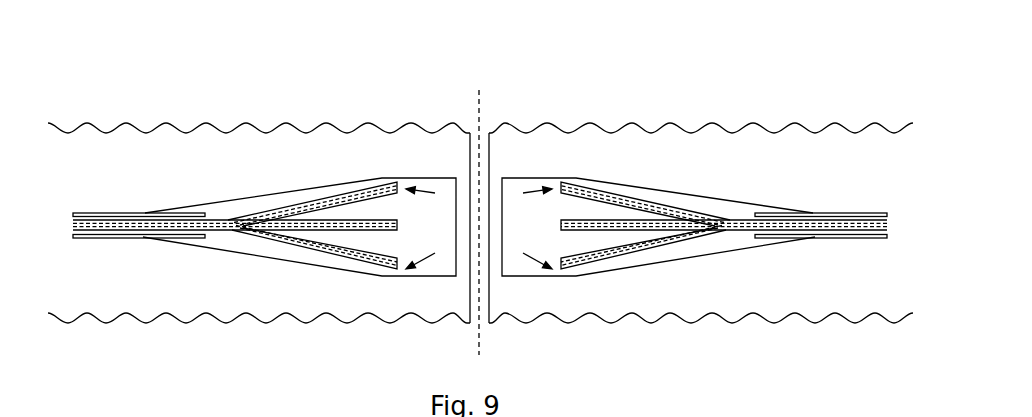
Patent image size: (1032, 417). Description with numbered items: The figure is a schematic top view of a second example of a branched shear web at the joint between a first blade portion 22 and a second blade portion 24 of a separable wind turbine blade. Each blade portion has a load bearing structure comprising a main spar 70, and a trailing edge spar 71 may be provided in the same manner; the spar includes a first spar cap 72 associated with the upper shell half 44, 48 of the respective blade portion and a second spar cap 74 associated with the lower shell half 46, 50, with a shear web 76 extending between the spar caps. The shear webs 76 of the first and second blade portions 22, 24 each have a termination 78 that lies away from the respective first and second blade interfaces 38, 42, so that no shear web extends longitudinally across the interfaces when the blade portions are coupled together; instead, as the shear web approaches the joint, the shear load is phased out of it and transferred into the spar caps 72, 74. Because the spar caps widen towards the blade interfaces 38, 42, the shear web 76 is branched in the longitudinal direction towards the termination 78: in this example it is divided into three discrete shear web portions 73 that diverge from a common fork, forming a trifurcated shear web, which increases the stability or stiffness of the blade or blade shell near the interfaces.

The first blade portion 22 is at (241, 94).
The second blade portion 24 is at (673, 84).
The first blade interface 38 is at (464, 148).
The second blade interface 42 is at (494, 152).
The upper shell half 44 is at (257, 177).
The lower shell half 46 is at (107, 167).
The upper shell half 48 is at (701, 179).
The lower shell half 50 is at (792, 147).
The main spar 70 is at (473, 195).
The trailing edge spar 71 is at (887, 188).
The first spar cap 72 is at (474, 248).
The second spar cap 74 is at (227, 243).
The discrete shear web portions 73 is at (322, 203).
The shear web 76 is at (123, 230).
The termination 78 is at (407, 225).